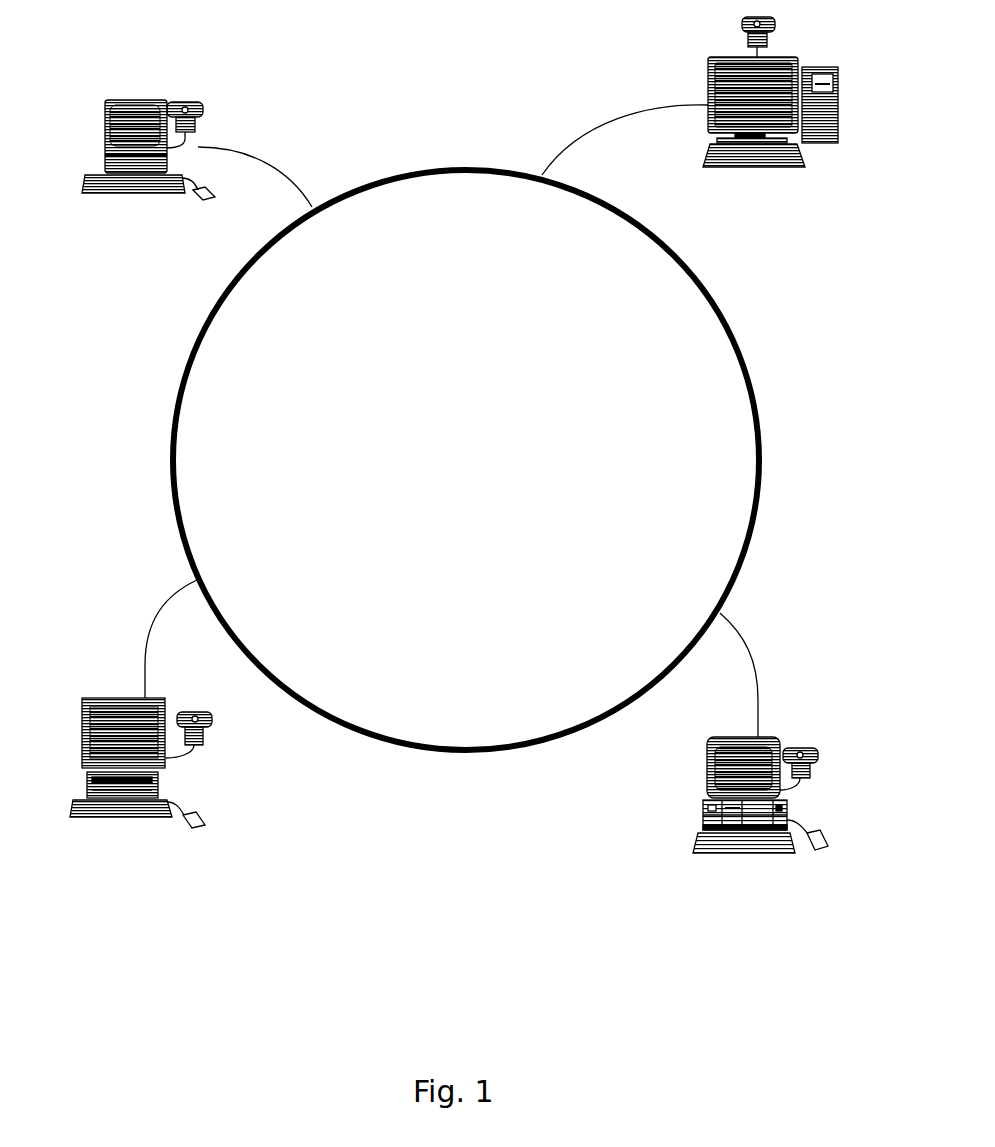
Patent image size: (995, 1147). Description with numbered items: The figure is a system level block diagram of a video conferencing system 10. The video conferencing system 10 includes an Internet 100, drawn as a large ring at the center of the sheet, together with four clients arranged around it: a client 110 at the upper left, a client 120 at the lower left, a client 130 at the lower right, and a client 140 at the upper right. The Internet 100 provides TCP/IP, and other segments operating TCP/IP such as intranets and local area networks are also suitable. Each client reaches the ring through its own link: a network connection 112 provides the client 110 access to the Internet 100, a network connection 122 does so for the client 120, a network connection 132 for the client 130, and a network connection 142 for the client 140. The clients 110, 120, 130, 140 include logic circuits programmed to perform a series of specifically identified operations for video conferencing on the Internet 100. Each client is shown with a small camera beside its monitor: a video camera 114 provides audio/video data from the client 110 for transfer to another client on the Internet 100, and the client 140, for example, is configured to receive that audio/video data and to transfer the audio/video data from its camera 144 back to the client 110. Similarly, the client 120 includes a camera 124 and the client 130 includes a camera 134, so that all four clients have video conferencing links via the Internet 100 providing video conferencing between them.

The video conferencing system 10 is at (451, 550).
The Internet 100 is at (138, 451).
The client 110 is at (201, 155).
The network connection 112 is at (281, 152).
The video camera 114 is at (193, 95).
The client 120 is at (178, 751).
The network connection 122 is at (136, 621).
The camera 124 is at (222, 728).
The client 130 is at (763, 793).
The network connection 132 is at (750, 608).
The camera 134 is at (809, 740).
The client 140 is at (682, 94).
The network connection 142 is at (578, 115).
The camera 144 is at (788, 22).